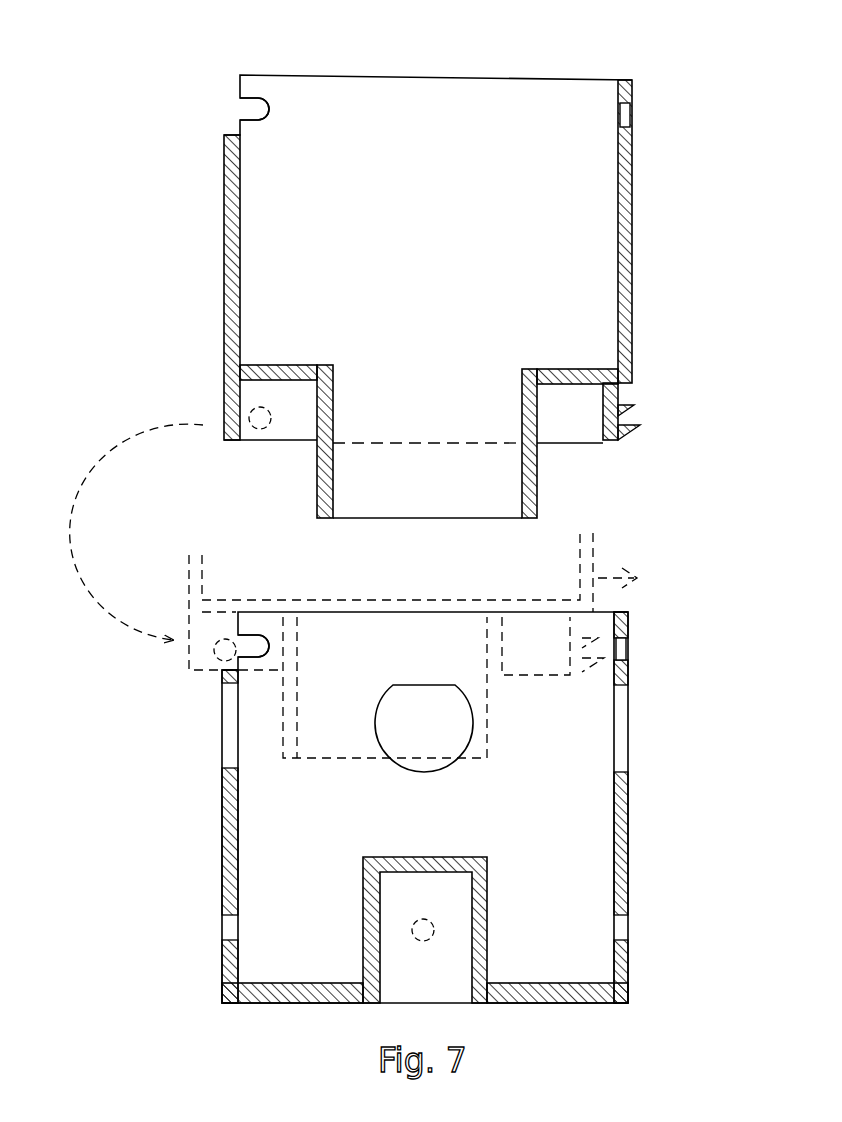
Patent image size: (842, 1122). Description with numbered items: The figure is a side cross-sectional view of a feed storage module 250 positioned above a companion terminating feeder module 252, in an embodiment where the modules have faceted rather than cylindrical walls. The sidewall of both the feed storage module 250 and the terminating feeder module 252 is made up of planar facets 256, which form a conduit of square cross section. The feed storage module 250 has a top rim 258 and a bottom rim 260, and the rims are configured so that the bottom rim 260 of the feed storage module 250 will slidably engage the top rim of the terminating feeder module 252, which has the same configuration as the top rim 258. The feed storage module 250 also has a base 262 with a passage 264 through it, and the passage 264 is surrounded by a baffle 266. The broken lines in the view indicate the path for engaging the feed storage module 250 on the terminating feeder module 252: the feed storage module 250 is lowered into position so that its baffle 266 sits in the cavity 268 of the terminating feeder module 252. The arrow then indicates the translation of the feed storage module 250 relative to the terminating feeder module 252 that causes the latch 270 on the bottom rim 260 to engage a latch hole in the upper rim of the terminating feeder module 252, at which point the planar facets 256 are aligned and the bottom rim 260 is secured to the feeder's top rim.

The feed storage module 250 is at (185, 298).
The terminating feeder module 252 is at (170, 812).
The planar facets 256 is at (638, 90).
The top rim 258 is at (621, 443).
The bottom rim 260 is at (540, 478).
The base 262 is at (472, 798).
The passage 264 is at (628, 436).
The baffle 266 is at (632, 650).
The cavity 268 is at (263, 432).
The latch 270 is at (262, 108).